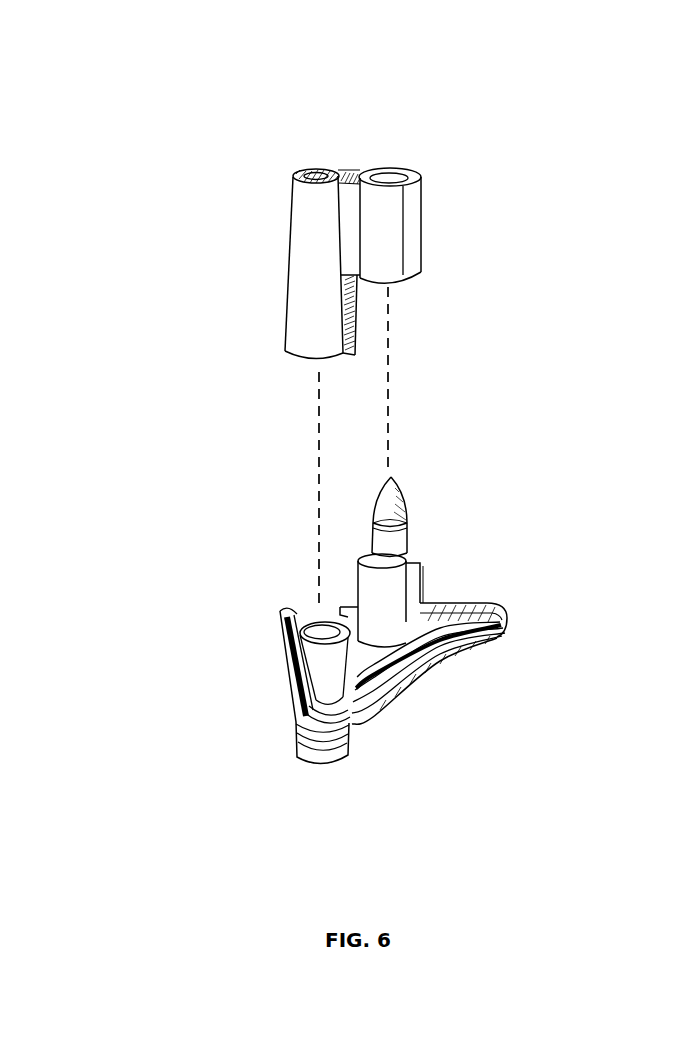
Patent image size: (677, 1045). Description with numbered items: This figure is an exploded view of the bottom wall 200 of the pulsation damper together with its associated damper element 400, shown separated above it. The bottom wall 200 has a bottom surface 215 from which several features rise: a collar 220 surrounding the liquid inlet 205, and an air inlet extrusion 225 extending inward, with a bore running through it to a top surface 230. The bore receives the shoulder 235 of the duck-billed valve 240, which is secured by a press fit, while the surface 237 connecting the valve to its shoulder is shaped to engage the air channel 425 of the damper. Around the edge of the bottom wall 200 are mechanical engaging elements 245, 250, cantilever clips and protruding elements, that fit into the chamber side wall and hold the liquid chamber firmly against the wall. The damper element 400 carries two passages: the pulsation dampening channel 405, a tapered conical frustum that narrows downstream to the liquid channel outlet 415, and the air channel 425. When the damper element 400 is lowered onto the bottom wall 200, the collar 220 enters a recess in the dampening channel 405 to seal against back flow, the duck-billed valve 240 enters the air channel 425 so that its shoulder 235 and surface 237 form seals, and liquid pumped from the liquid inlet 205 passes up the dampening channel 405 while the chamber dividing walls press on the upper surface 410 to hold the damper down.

The bottom wall 200 is at (203, 832).
The liquid inlet 205 is at (361, 749).
The bottom surface 215 is at (322, 658).
The collar 220 is at (340, 632).
The air inlet extrusion 225 is at (434, 578).
The top surface 230 is at (415, 563).
The shoulder 235 is at (421, 551).
The surface 237 is at (408, 543).
The duck-billed valve 240 is at (408, 490).
The mechanical engaging element 245 is at (291, 616).
The mechanical engaging element 250 is at (297, 693).
The damper element 400 is at (170, 344).
The pulsation dampening channel 405 is at (310, 263).
The upper surface 410 is at (342, 176).
The liquid channel outlet 415 is at (306, 170).
The air channel 425 is at (405, 208).